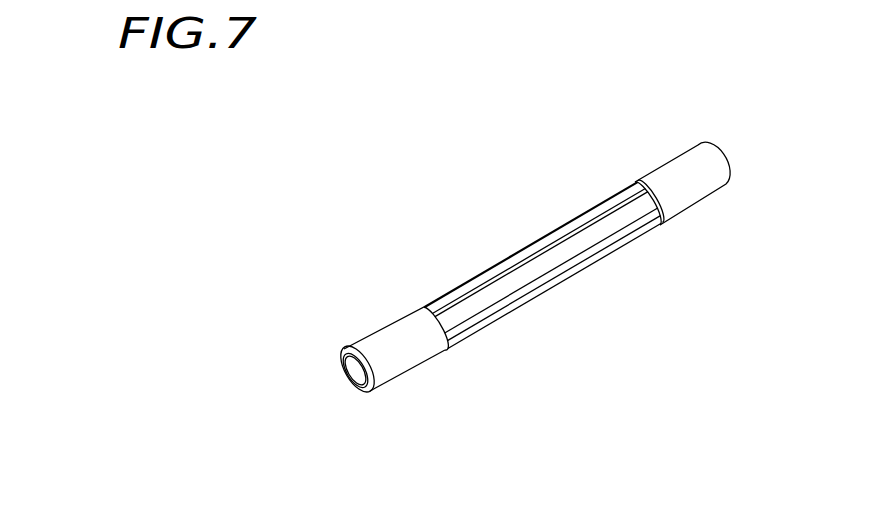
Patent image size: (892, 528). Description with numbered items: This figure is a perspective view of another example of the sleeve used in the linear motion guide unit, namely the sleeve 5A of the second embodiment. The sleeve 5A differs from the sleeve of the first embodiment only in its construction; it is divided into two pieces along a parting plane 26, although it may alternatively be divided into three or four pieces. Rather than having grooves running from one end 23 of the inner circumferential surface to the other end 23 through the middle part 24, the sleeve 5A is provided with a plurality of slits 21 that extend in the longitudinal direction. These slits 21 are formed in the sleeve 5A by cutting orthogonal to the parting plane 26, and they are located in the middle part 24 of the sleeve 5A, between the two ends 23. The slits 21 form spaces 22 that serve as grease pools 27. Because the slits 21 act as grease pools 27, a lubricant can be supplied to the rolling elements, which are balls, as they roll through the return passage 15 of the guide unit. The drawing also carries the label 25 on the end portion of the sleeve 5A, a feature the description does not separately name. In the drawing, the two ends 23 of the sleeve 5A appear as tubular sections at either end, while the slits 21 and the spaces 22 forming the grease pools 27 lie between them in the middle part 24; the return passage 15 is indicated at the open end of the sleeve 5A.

The sleeve 5A is at (552, 236).
The return passage 15 is at (352, 375).
The slits 21 is at (531, 275).
The spaces 22 is at (541, 254).
The grease pools 27 is at (537, 212).
The end 23 is at (391, 338).
The middle part 24 is at (481, 280).
The end portion 25 is at (677, 168).
The parting plane 26 is at (420, 362).